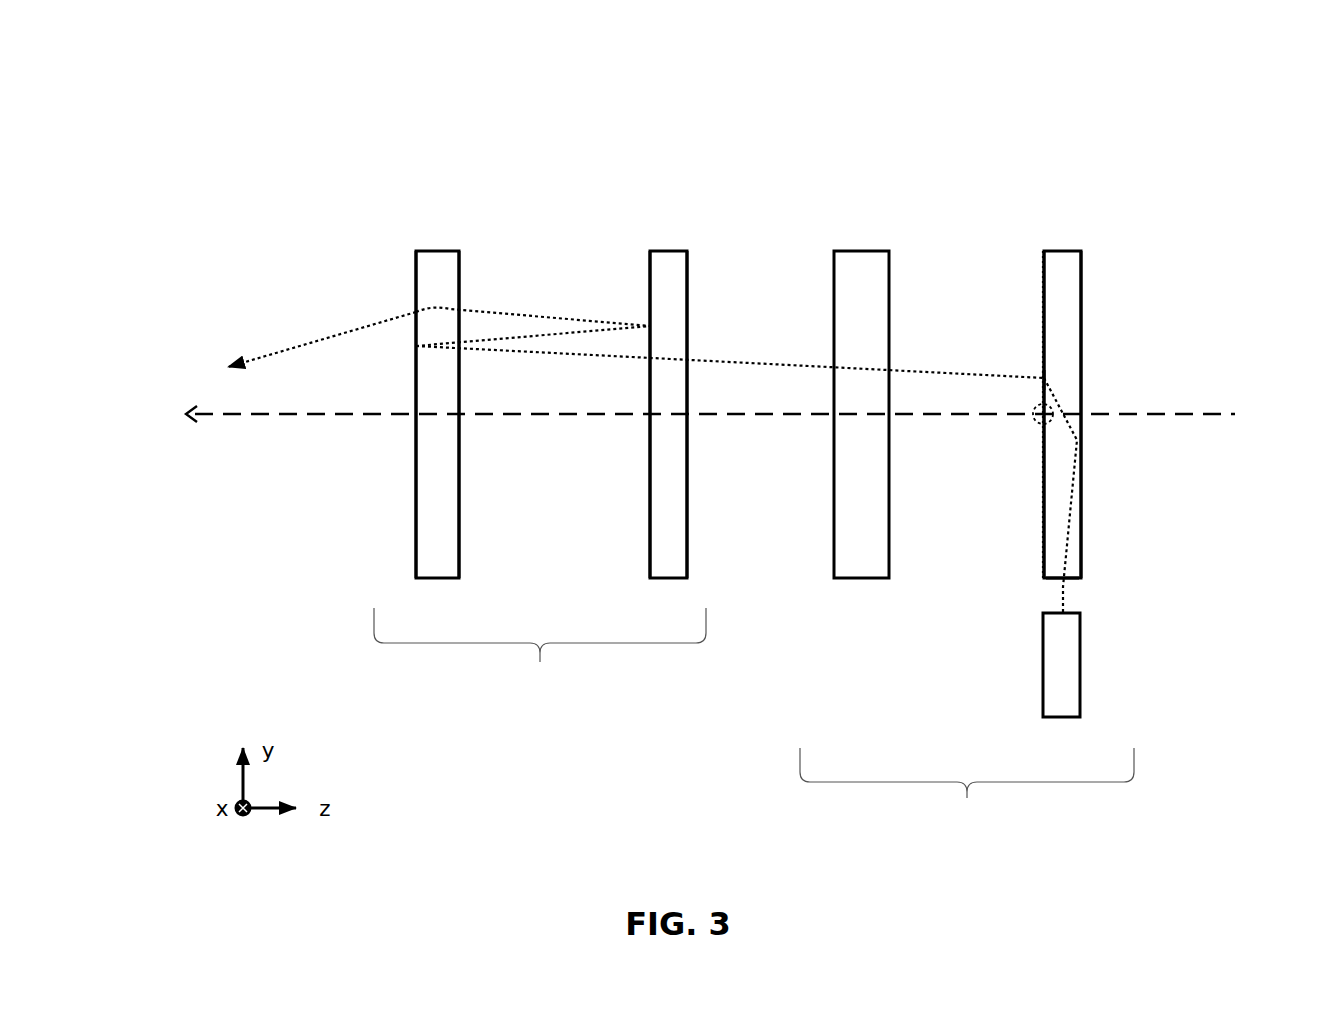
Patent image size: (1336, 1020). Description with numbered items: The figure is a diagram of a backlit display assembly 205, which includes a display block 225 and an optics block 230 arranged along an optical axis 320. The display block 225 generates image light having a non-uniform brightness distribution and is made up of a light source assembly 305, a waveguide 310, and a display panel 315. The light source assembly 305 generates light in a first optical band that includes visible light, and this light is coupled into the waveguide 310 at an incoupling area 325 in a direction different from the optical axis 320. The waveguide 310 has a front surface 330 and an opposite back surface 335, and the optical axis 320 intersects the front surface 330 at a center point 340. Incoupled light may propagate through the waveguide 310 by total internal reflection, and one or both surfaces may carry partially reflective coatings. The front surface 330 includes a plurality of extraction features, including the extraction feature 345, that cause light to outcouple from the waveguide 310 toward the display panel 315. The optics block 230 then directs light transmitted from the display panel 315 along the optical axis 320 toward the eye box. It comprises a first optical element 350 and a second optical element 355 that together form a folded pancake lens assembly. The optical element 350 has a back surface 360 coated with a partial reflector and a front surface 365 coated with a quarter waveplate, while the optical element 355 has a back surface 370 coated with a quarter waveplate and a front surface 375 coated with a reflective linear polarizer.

The backlit display assembly 205 is at (179, 73).
The display block 225 is at (967, 814).
The optics block 230 is at (540, 675).
The light source assembly 305 is at (1080, 668).
The waveguide 310 is at (1133, 414).
The display panel 315 is at (869, 562).
The optical axis 320 is at (657, 397).
The incoupling area 325 is at (1074, 583).
The front surface 330 is at (1041, 332).
The back surface 335 is at (1084, 290).
The center point 340 is at (1033, 406).
The extraction feature 345 is at (1044, 379).
The optical element 350 is at (670, 277).
The optical element 355 is at (440, 295).
The back surface 360 is at (690, 270).
The front surface 365 is at (646, 272).
The back surface 370 is at (463, 270).
The front surface 375 is at (413, 292).